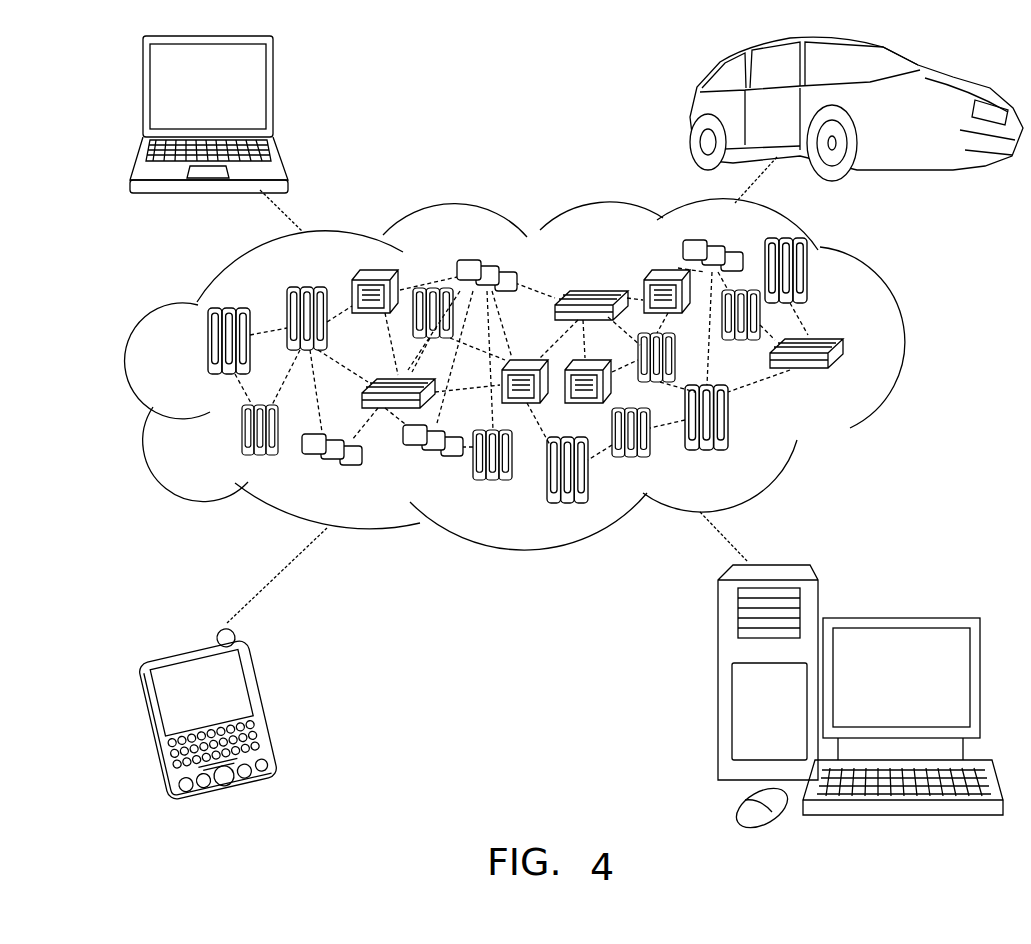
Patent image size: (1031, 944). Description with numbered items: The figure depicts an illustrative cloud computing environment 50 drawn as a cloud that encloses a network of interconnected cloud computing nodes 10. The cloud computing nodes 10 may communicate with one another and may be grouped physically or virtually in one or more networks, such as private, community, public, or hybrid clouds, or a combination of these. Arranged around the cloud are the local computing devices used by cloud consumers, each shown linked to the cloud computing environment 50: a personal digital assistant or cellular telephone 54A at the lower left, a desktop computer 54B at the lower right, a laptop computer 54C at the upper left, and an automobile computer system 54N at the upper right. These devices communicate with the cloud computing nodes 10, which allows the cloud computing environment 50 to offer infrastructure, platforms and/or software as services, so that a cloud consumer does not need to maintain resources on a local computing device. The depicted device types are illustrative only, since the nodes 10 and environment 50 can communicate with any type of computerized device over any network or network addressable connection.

The cloud computing nodes 10 is at (845, 377).
The cloud computing environment 50 is at (903, 353).
The personal digital assistant or cellular telephone 54A is at (263, 705).
The desktop computer 54B is at (900, 617).
The laptop computer 54C is at (273, 95).
The automobile computer system 54N is at (690, 115).